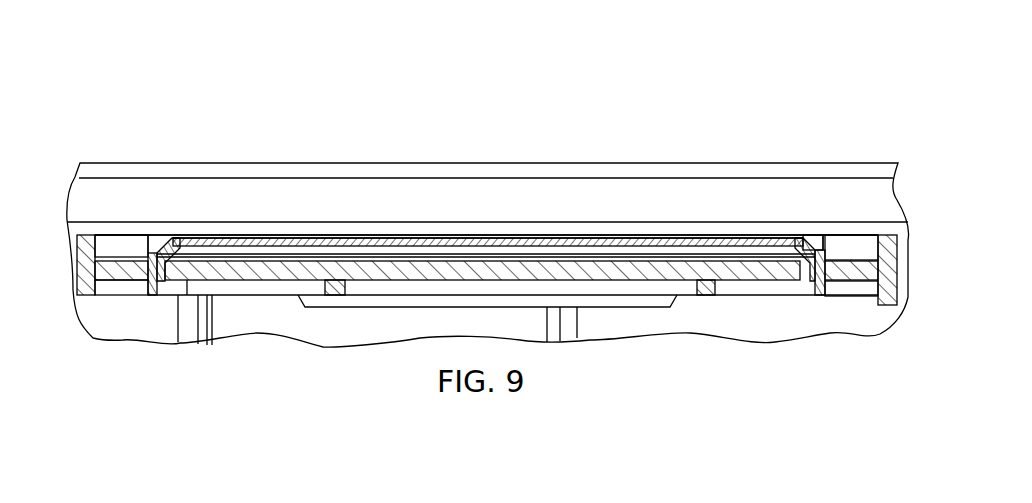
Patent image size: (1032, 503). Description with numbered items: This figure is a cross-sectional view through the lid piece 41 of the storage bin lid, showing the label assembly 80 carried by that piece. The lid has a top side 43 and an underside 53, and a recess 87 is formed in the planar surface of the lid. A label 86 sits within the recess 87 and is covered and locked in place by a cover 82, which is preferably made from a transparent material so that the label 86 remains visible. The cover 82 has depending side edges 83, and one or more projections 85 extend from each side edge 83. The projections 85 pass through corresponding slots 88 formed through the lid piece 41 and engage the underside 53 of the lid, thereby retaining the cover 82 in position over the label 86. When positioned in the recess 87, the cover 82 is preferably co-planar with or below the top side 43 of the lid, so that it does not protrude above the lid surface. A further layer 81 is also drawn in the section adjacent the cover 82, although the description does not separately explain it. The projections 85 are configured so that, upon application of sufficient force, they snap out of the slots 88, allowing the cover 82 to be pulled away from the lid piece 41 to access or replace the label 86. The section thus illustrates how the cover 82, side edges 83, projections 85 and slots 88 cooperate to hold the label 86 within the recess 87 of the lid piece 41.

The lid piece 41 is at (886, 152).
The top side 43 is at (86, 226).
The underside 53 is at (273, 290).
The label assembly 80 is at (269, 200).
The cover layer 81 is at (672, 235).
The cover 82 is at (376, 230).
The depending side edges 83 is at (170, 250).
The projections 85 is at (157, 292).
The label 86 is at (567, 254).
The recess 87 is at (818, 243).
The slots 88 is at (180, 283).